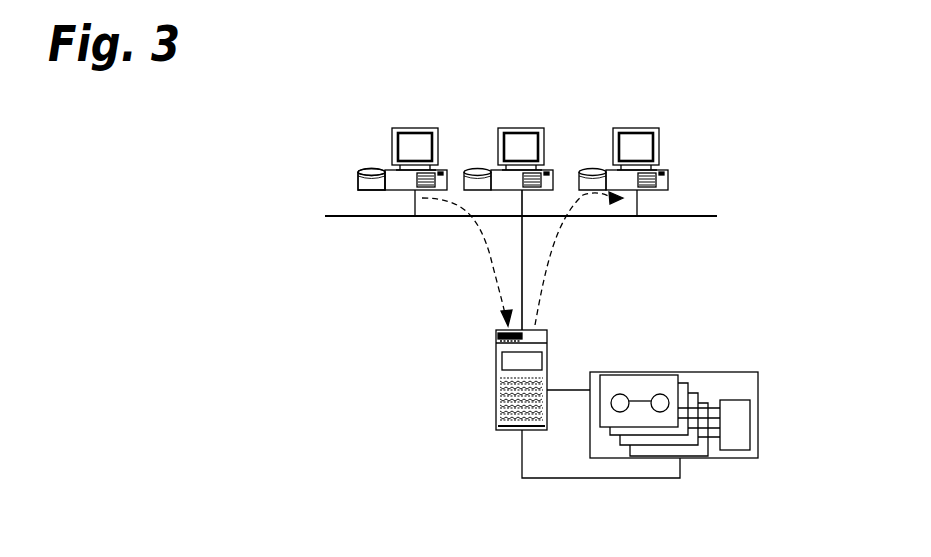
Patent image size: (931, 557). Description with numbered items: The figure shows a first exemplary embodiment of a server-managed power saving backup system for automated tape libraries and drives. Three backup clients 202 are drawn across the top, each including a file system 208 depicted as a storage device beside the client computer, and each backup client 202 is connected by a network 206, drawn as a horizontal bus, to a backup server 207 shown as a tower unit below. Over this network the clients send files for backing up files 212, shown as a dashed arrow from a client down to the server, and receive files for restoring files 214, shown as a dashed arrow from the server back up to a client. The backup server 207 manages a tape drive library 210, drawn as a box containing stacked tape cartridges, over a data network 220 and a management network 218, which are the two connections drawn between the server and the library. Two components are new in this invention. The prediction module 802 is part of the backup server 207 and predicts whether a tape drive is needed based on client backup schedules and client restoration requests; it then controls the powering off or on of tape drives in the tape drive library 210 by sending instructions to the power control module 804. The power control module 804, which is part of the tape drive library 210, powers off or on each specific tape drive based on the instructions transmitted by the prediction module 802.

The backup client 202 is at (405, 128).
The network 206 is at (690, 216).
The backup server 207 is at (500, 331).
The file system 208 is at (360, 175).
The tape drive library 210 is at (660, 370).
The backing up files 212 is at (487, 241).
The restoring files 214 is at (560, 232).
The management network 218 is at (552, 482).
The data network 220 is at (565, 375).
The prediction module 802 is at (513, 362).
The power control module 804 is at (728, 421).